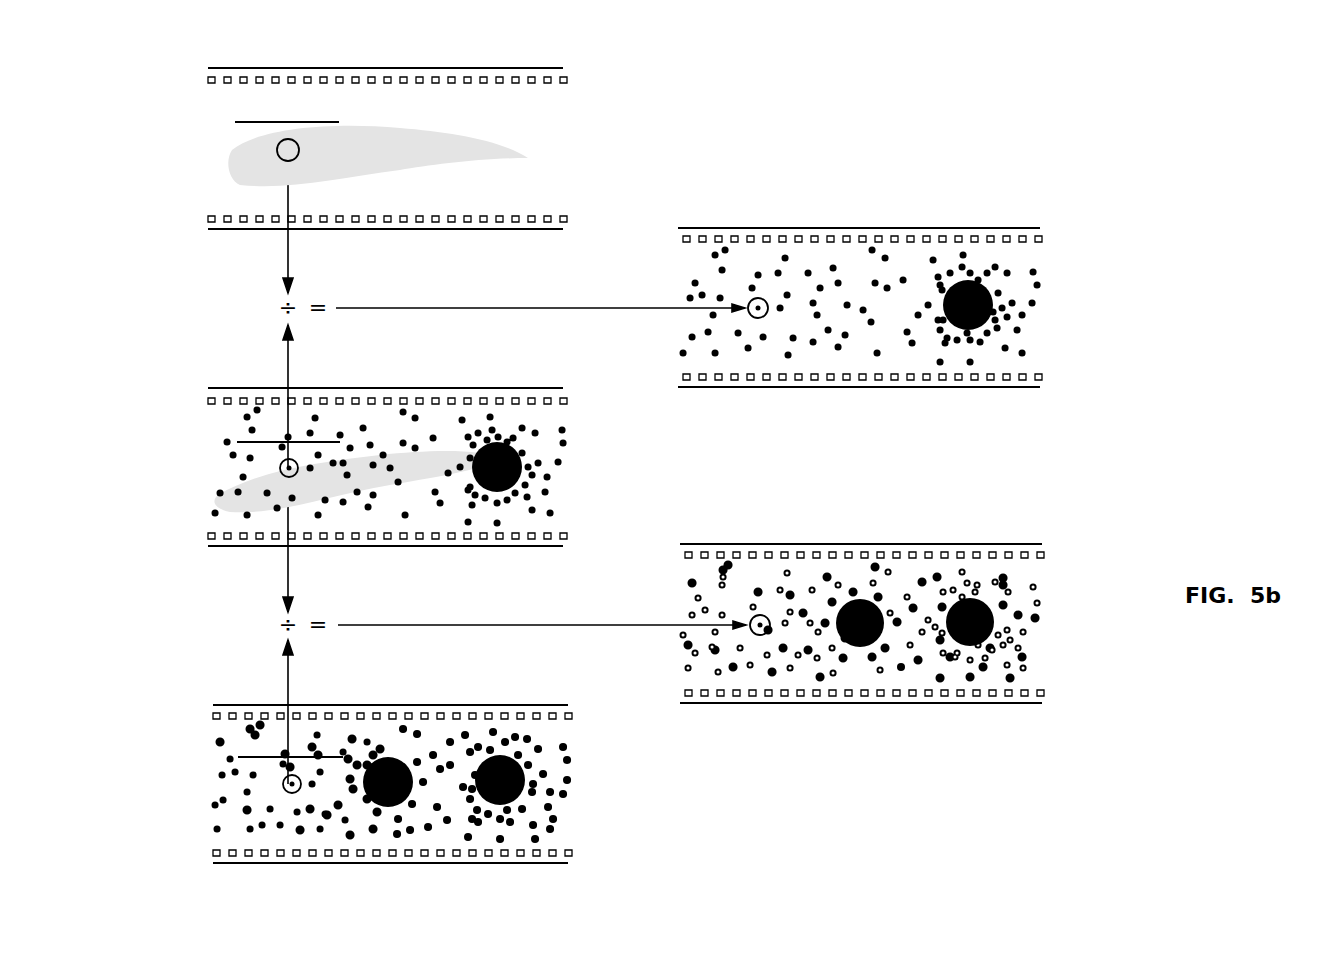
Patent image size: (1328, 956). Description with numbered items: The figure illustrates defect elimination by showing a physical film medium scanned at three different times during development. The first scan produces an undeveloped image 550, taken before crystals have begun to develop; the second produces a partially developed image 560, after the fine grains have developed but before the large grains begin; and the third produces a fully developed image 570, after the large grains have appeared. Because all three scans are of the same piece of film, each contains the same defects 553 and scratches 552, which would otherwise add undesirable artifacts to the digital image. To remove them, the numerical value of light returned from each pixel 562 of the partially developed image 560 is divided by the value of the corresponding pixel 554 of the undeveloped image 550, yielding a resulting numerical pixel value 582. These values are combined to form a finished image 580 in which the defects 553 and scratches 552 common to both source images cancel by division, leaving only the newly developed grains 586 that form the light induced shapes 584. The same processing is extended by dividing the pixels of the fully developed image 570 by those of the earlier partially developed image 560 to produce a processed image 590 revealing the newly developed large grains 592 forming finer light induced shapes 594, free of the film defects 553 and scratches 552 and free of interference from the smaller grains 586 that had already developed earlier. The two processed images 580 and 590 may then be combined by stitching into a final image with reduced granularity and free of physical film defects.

The undeveloped image 550 is at (395, 68).
The scratches 552 is at (236, 122).
The defects 553 is at (220, 165).
The pixel 554 is at (277, 152).
The partially developed image 560 is at (398, 388).
The pixel 562 is at (280, 470).
The fully developed image 570 is at (400, 705).
The finished image 580 is at (830, 228).
The resulting numerical pixel value 582 is at (760, 318).
The light induced shapes 584 is at (972, 335).
The newly developed grains 586 is at (871, 324).
The processed image 590 is at (830, 544).
The newly developed large grains 592 is at (903, 671).
The finer light induced shapes 594 is at (856, 648).